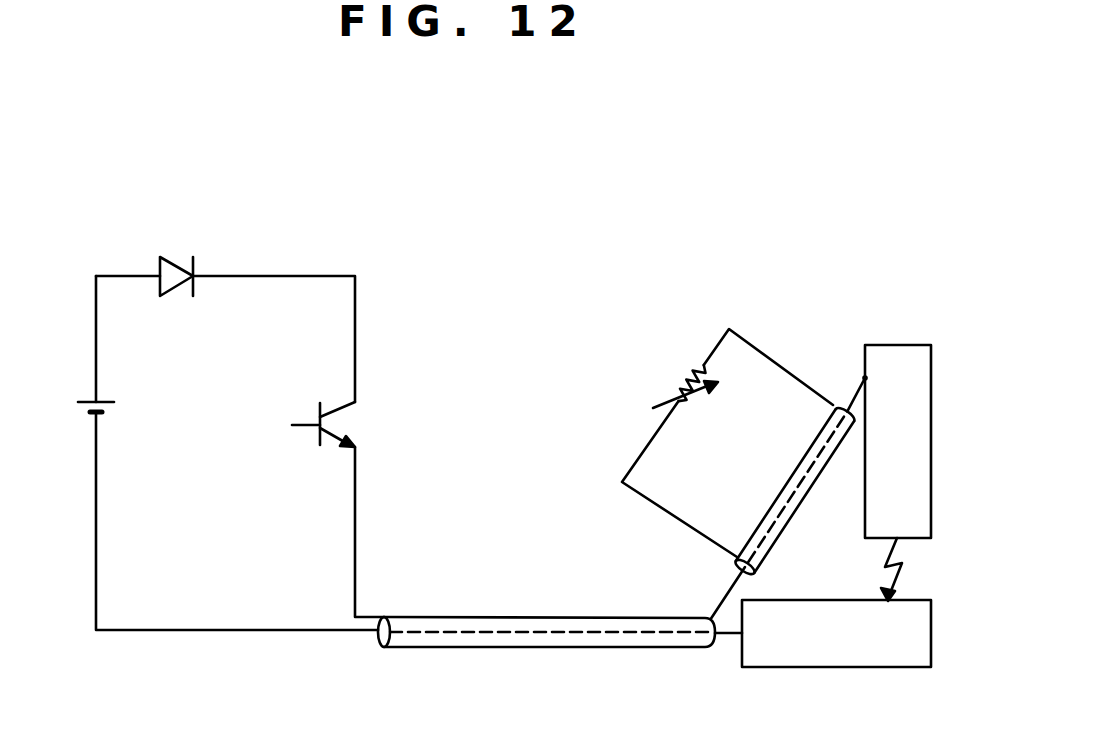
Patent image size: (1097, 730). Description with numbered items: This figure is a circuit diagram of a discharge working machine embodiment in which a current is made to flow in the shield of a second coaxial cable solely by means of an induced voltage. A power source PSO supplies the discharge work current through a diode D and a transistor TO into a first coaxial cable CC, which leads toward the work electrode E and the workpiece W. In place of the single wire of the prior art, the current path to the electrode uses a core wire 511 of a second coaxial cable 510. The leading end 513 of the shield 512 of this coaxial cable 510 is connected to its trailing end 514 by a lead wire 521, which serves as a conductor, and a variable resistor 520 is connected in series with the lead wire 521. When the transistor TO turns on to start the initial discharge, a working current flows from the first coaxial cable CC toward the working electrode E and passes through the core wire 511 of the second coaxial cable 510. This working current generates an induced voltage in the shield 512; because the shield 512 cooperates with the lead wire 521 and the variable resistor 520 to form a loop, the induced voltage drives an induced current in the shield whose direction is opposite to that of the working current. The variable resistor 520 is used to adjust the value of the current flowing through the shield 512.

The diode D is at (172, 263).
The power source PSO is at (108, 398).
The transistor TO is at (350, 426).
The first coaxial cable CC is at (505, 617).
The second coaxial cable 510 is at (789, 479).
The core wire 511 is at (757, 538).
The shield 512 is at (778, 538).
The leading end 513 is at (833, 405).
The trailing end 514 is at (735, 560).
The variable resistor 520 is at (676, 385).
The lead wire 521 is at (762, 352).
The work electrode E is at (918, 343).
The workpiece W is at (925, 600).